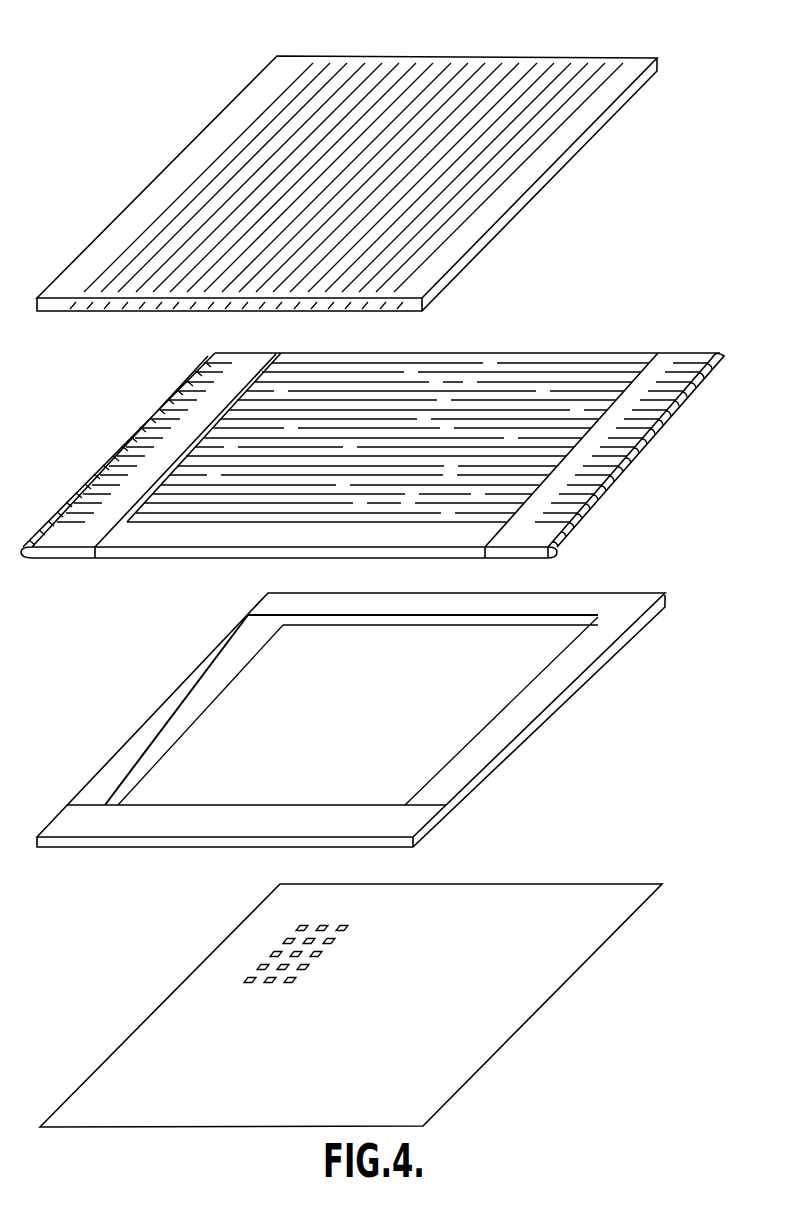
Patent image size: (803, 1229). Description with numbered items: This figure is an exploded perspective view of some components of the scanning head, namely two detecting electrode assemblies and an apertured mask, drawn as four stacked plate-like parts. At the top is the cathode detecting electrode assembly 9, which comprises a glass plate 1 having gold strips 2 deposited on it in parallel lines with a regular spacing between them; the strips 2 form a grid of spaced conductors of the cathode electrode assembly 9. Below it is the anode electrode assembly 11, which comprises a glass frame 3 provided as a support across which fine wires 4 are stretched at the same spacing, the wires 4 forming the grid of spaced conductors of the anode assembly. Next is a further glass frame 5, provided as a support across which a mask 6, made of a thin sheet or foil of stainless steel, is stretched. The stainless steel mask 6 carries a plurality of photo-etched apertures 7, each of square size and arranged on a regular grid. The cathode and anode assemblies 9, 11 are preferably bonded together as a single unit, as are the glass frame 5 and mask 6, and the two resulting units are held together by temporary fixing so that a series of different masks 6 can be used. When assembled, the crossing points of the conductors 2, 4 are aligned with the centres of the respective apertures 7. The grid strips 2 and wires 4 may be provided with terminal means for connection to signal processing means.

The glass plate 1 is at (526, 185).
The gold strips 2 is at (607, 75).
The glass frame 3 is at (393, 428).
The fine wires 4 is at (564, 390).
The glass frame 5 is at (593, 650).
The mask 6 is at (351, 983).
The photo-etched apertures 7 is at (345, 928).
The cathode detecting electrode assembly 9 is at (376, 157).
The anode electrode assembly 11 is at (697, 401).